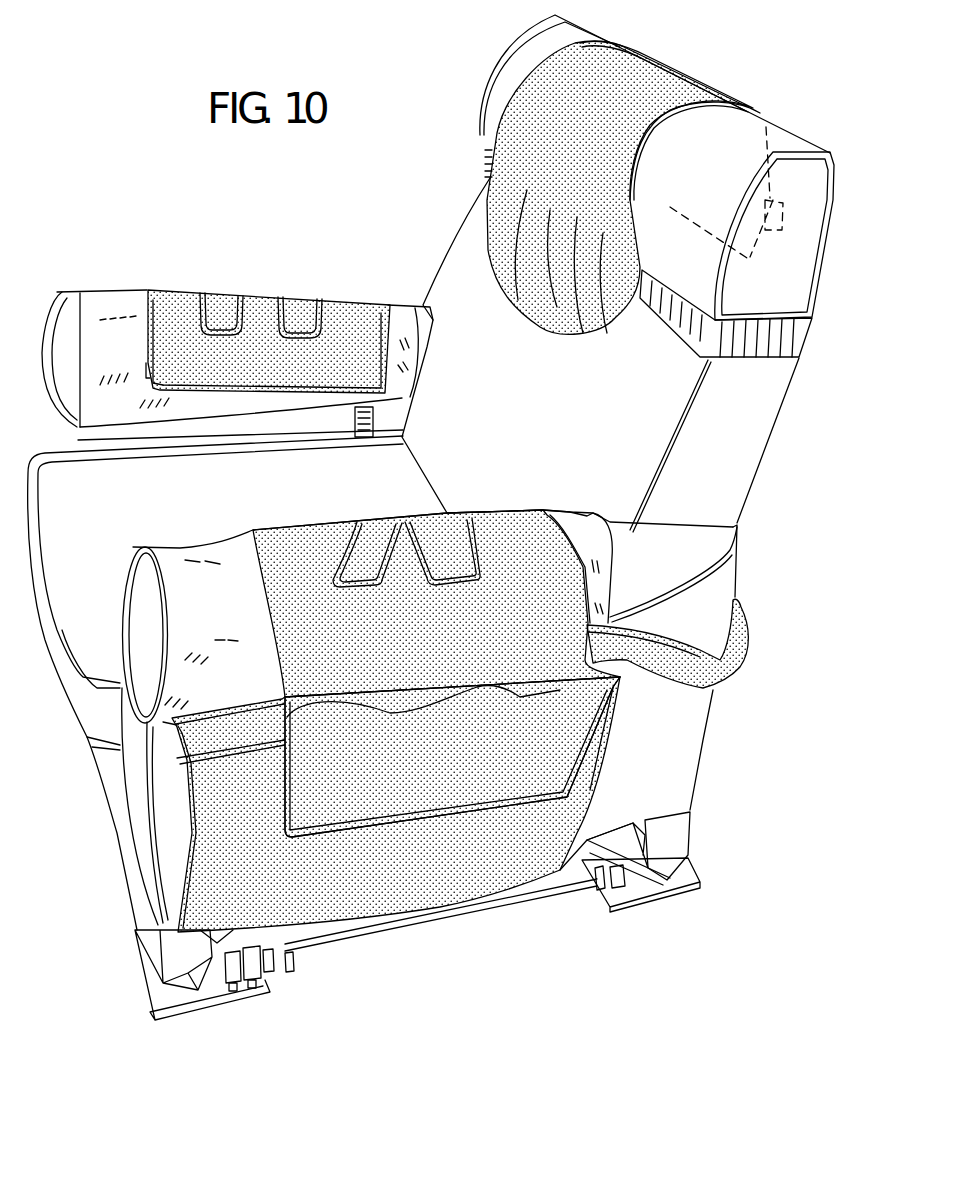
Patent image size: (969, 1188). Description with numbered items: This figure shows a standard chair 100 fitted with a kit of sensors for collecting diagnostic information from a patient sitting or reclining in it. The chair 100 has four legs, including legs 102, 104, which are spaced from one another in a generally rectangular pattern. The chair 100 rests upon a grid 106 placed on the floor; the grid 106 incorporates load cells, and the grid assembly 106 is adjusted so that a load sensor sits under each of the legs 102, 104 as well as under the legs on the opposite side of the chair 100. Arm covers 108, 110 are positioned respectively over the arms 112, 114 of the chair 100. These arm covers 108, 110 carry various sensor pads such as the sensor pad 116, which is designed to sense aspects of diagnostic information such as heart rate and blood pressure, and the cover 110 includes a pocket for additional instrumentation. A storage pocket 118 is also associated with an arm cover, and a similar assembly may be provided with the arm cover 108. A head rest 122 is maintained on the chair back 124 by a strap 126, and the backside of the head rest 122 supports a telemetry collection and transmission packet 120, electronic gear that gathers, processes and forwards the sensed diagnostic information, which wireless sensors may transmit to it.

The chair 100 is at (758, 473).
The leg 102 is at (693, 827).
The leg 104 is at (168, 947).
The grid 106 is at (530, 900).
The arm cover 108 is at (215, 393).
The arm cover 110 is at (267, 537).
The arm 112 is at (117, 413).
The arm 114 is at (165, 550).
The sensor pad 116 is at (340, 523).
The storage pocket 118 is at (202, 853).
The telemetry collection and transmission packet 120 is at (782, 227).
The head rest 122 is at (690, 75).
The chair back 124 is at (757, 410).
The strap 126 is at (660, 335).